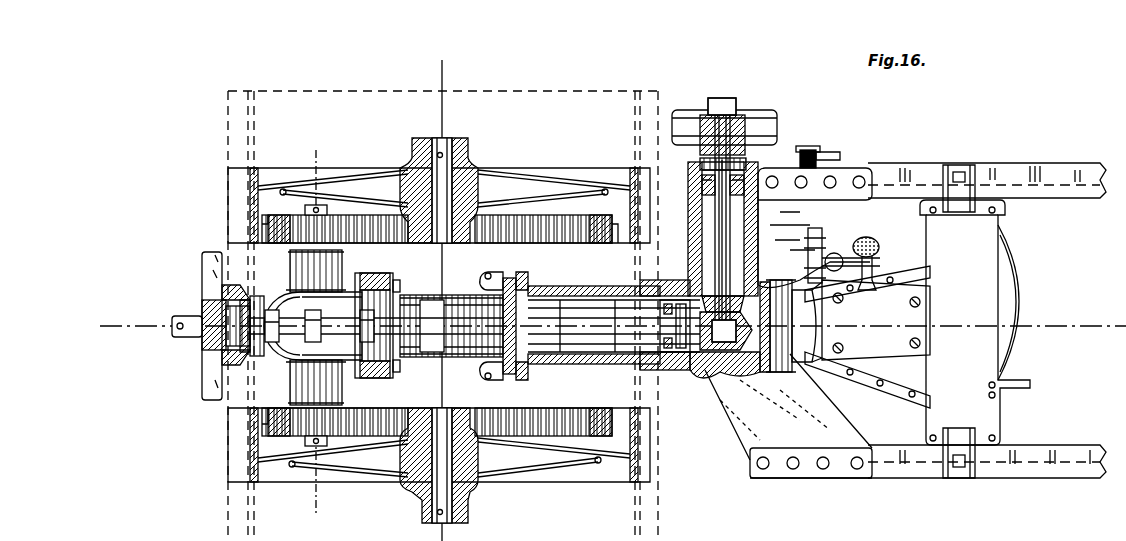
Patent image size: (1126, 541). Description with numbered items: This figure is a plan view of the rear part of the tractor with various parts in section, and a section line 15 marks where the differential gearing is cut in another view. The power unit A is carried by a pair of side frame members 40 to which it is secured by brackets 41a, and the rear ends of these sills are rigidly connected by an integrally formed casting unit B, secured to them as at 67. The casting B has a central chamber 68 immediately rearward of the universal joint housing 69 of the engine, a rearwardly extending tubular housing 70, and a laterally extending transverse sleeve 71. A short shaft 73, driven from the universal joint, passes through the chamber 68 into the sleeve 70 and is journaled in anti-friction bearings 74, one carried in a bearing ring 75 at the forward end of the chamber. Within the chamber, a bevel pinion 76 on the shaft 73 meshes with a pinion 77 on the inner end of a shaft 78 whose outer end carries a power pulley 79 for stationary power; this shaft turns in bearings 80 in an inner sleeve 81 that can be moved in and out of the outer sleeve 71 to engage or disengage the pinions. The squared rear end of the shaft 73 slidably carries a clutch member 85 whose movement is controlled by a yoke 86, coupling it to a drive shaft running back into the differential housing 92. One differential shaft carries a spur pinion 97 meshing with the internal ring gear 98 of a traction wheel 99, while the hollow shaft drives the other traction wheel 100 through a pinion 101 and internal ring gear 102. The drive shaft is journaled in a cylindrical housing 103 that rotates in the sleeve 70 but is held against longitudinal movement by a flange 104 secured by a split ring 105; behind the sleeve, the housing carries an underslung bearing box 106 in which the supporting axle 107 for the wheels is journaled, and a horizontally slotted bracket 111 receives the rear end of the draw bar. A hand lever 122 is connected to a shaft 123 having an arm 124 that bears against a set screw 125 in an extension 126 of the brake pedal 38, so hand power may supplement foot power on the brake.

The section line 15 is at (287, 158).
The brake pedal 38 is at (878, 258).
The side frame member 40 is at (1030, 172).
The bracket 41a is at (962, 470).
The securing point 67 is at (866, 186).
The central chamber 68 is at (722, 370).
The universal joint housing 69 is at (796, 313).
The tubular housing 70 is at (614, 356).
The transverse sleeve 71 is at (690, 230).
The short shaft 73 is at (715, 345).
The anti-friction bearing 74 is at (682, 352).
The bearing ring 75 is at (800, 331).
The bevel pinion 76 is at (742, 372).
The pinion 77 is at (690, 290).
The shaft 78 is at (722, 210).
The power pulley 79 is at (776, 128).
The bearing 80 is at (700, 164).
The inner sleeve 81 is at (700, 185).
The clutch member 85 is at (660, 348).
The yoke 86 is at (655, 280).
The differential housing 92 is at (290, 346).
The spur pinion 97 is at (327, 222).
The internal ring gear 98 is at (572, 230).
The traction wheel 99 is at (226, 196).
The traction wheel 100 is at (614, 468).
The pinion 101 is at (303, 420).
The internal ring gear 102 is at (387, 424).
The cylindrical housing 103 is at (405, 335).
The flange 104 is at (520, 288).
The split ring 105 is at (493, 274).
The bearing box 106 is at (418, 259).
The supporting axle 107 is at (455, 490).
The bracket 111 is at (213, 395).
The hand lever 122 is at (834, 156).
The shaft 123 is at (808, 150).
The arm 124 is at (834, 256).
The set screw 125 is at (866, 240).
The extension 126 is at (870, 264).
The power unit A is at (1032, 330).
The casting unit B is at (730, 438).